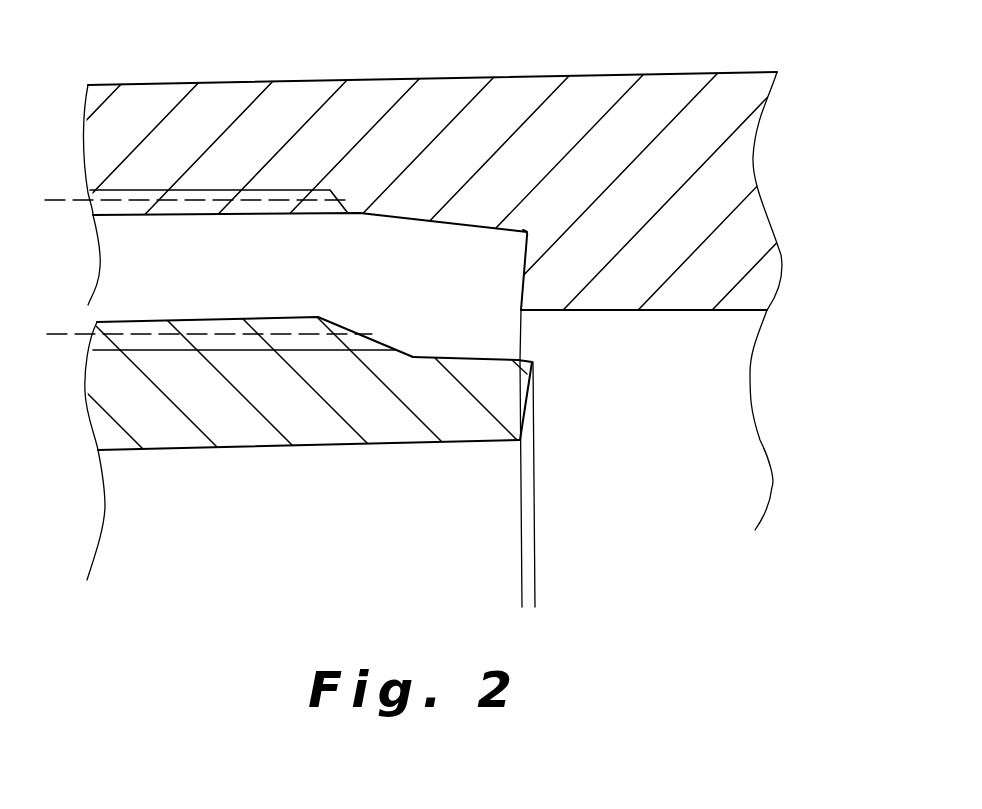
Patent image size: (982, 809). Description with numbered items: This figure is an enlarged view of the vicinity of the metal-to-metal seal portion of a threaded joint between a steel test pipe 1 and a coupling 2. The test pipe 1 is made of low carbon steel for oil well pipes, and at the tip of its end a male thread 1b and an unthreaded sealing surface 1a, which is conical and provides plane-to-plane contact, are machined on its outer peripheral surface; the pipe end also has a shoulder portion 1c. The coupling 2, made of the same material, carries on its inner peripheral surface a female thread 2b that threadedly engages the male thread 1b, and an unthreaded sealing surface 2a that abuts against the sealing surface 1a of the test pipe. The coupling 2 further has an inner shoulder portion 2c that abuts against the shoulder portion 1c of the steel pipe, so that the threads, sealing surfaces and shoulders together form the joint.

The test pipe 1 is at (175, 435).
The unthreaded sealing surface 1a is at (490, 355).
The male thread 1b is at (213, 325).
The shoulder portion 1c is at (523, 417).
The coupling 2 is at (462, 85).
The unthreaded sealing surface 2a is at (397, 222).
The female thread 2b is at (137, 208).
The inner shoulder portion 2c is at (520, 287).